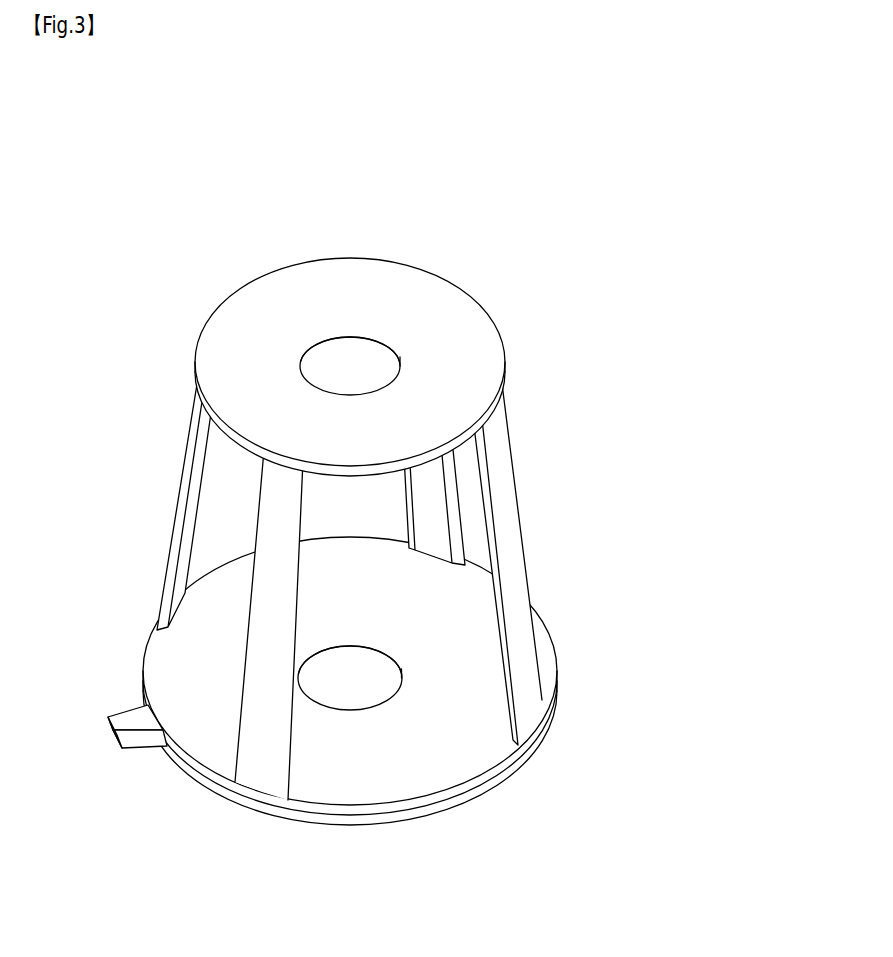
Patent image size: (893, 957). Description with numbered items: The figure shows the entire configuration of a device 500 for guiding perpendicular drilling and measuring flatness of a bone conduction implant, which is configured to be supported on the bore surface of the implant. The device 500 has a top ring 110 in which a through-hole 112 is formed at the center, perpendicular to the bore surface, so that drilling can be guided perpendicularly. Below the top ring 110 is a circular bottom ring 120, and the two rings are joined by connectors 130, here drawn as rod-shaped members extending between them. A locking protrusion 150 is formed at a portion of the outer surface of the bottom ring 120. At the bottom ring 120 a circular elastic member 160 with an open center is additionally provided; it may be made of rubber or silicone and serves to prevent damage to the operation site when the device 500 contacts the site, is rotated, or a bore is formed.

The device for guiding perpendicular drilling and measuring flatness 500 is at (309, 516).
The top ring 110 is at (453, 340).
The through-hole 112 is at (355, 343).
The bottom ring 120 is at (215, 732).
The connectors 130 is at (182, 492).
The locking protrusion 150 is at (110, 734).
The circular elastic member 160 is at (377, 822).